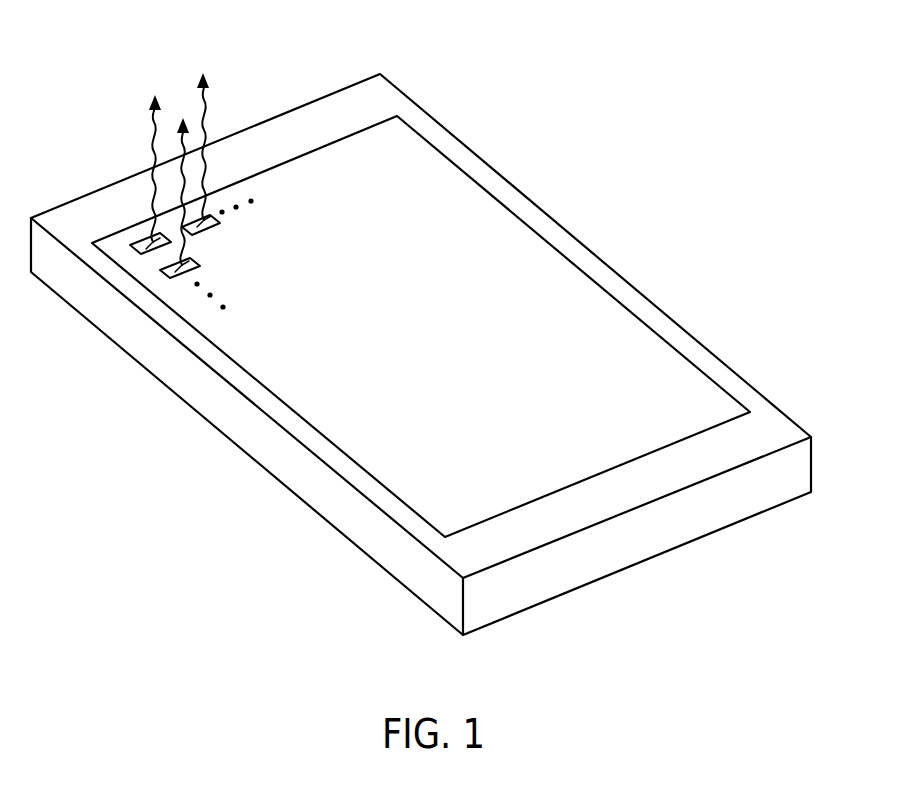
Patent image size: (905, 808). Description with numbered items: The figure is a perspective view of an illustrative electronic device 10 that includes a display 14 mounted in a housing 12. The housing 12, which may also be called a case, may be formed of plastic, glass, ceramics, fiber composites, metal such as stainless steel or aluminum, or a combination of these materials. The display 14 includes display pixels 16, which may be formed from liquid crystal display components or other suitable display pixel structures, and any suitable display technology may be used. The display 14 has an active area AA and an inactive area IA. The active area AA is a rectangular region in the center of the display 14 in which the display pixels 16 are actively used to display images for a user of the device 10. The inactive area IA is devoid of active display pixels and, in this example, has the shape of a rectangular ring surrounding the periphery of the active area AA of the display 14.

The electronic device 10 is at (419, 319).
The housing 12 is at (380, 543).
The display 14 is at (630, 340).
The display pixels 16 is at (210, 217).
The inactive area IA is at (577, 252).
The active area AA is at (597, 473).